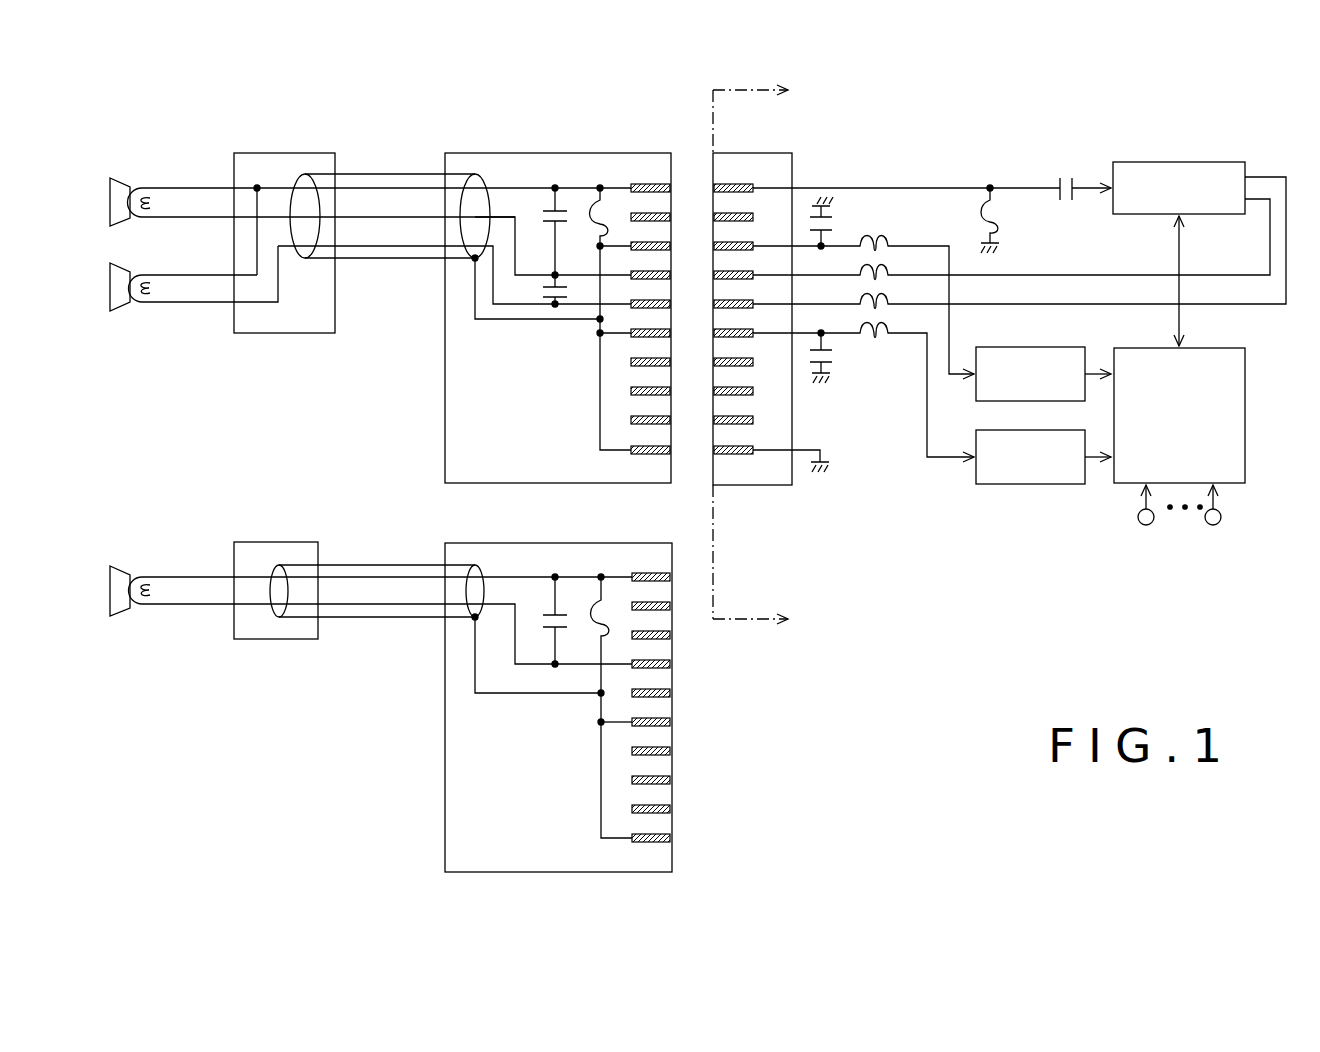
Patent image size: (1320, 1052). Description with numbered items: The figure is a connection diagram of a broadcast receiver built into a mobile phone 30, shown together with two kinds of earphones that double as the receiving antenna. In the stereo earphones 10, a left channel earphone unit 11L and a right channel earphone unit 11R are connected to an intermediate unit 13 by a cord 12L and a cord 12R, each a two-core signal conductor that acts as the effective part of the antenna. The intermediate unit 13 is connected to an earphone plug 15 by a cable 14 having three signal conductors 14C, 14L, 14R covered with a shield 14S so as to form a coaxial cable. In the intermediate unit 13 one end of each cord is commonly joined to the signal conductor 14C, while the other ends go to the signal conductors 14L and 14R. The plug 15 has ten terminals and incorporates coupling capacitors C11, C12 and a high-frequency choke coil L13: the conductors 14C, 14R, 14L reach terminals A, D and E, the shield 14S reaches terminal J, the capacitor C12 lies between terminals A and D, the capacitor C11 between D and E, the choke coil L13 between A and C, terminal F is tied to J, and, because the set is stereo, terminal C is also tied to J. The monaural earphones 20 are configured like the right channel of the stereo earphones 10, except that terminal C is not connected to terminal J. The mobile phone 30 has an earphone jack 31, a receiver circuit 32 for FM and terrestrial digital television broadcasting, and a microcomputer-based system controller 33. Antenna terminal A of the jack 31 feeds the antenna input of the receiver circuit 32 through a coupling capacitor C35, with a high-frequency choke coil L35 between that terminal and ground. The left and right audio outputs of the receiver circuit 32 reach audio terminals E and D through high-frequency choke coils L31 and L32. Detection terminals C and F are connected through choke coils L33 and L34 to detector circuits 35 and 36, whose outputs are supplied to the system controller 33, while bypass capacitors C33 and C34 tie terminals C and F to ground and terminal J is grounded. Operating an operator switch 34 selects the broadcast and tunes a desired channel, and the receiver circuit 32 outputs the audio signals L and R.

The stereo earphones 10 is at (262, 378).
The right channel earphone unit 11R is at (125, 226).
The left channel earphone unit 11L is at (125, 303).
The cord 12R is at (196, 220).
The cord 12L is at (190, 304).
The intermediate unit 13 is at (271, 153).
The cable 14 is at (360, 207).
The signal conductor 14C is at (412, 188).
The signal conductor 14R is at (391, 219).
The signal conductor 14L is at (428, 247).
The shield 14S is at (358, 260).
The earphone plug 15 is at (445, 440).
The coupling capacitor C11 is at (556, 311).
The coupling capacitor C12 is at (556, 218).
The high-frequency choke coil L13 is at (608, 304).
The monaural earphones 20 is at (265, 745).
The mobile phone 30 is at (735, 90).
The earphone jack 31 is at (733, 153).
The receiver circuit 32 is at (1164, 162).
The system controller 33 is at (1246, 393).
The operator switch 34 is at (1213, 527).
The detector circuit 35 is at (1014, 347).
The detector circuit 36 is at (1014, 484).
The bypass capacitor C33 is at (845, 223).
The bypass capacitor C34 is at (844, 362).
The coupling capacitor C35 is at (1079, 175).
The high-frequency choke coil L31 is at (1019, 254).
The high-frequency choke coil L32 is at (1011, 239).
The high-frequency choke coil L33 is at (863, 296).
The high-frequency choke coil L34 is at (863, 390).
The high-frequency choke coil L35 is at (1013, 220).